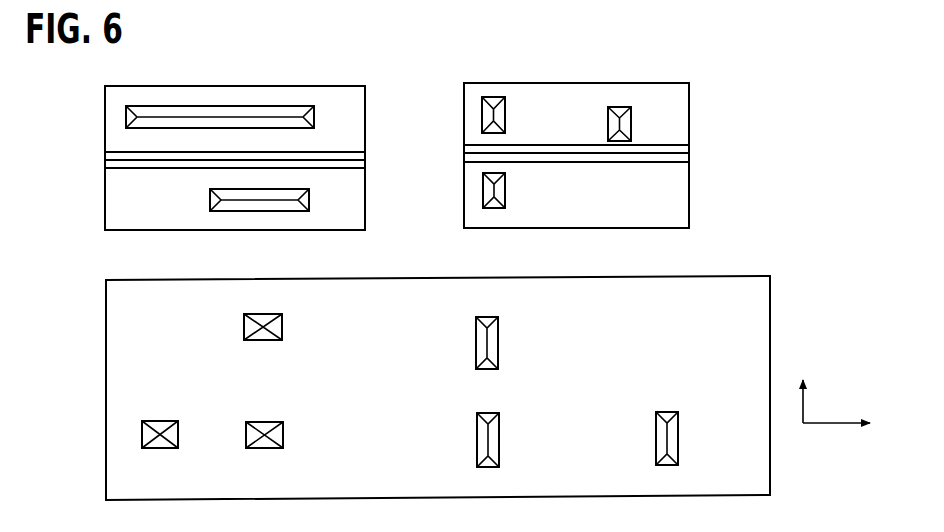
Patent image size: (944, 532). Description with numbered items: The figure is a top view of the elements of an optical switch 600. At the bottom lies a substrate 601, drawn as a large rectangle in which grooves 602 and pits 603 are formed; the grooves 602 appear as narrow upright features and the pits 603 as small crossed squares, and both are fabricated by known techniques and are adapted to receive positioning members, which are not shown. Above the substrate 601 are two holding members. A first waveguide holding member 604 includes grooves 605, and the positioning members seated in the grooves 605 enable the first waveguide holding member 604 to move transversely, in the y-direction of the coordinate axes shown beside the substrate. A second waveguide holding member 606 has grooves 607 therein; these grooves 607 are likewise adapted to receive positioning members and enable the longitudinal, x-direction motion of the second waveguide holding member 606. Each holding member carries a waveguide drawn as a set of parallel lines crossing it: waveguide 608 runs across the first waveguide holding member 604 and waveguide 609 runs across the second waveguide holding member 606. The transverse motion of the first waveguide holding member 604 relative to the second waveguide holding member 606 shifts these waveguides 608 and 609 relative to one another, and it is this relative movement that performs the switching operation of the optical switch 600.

The optical switch 600 is at (862, 117).
The substrate 601 is at (750, 317).
The grooves 602 is at (498, 338).
The pits 603 is at (282, 323).
The first waveguide holding member 604 is at (552, 82).
The grooves 605 is at (492, 100).
The second waveguide holding member 606 is at (285, 86).
The grooves 607 is at (310, 106).
The waveguide 608 is at (689, 146).
The waveguide 609 is at (105, 152).